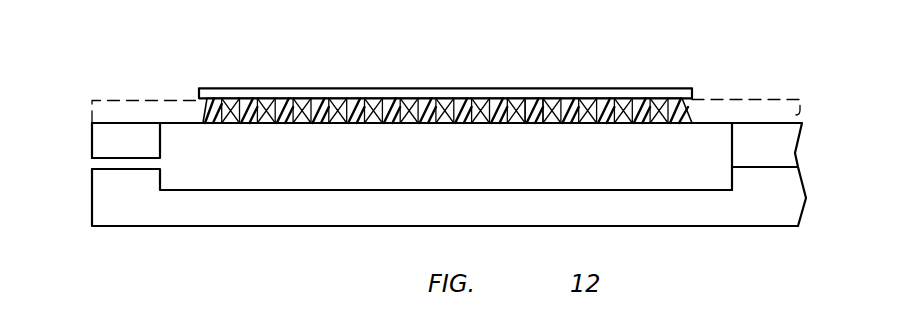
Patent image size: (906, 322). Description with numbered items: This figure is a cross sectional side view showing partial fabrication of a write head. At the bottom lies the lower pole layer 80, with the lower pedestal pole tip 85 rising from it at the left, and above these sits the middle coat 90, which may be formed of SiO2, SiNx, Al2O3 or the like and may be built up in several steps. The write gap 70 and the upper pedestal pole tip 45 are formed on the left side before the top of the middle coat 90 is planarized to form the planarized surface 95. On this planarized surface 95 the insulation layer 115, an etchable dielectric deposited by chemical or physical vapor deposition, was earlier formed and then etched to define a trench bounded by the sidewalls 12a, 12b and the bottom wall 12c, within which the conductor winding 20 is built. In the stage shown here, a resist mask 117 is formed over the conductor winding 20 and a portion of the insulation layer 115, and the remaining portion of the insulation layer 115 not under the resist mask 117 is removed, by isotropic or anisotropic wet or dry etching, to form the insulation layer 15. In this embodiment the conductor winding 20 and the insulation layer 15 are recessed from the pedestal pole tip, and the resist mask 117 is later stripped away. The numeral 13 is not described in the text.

The sidewall 12a is at (368, 155).
The sidewall 12b is at (368, 155).
The bottom wall 12c is at (445, 103).
The spacer element 13 is at (535, 98).
The insulation layer 15 is at (678, 98).
The conductor winding 20 is at (265, 105).
The upper pedestal pole tip 45 is at (104, 137).
The write gap 70 is at (103, 163).
The lower pole layer 80 is at (193, 203).
The lower pedestal pole tip 85 is at (128, 181).
The middle coat 90 is at (260, 152).
The planarized surface 95 is at (183, 121).
The insulation layer 115 is at (758, 110).
The resist mask 117 is at (600, 93).